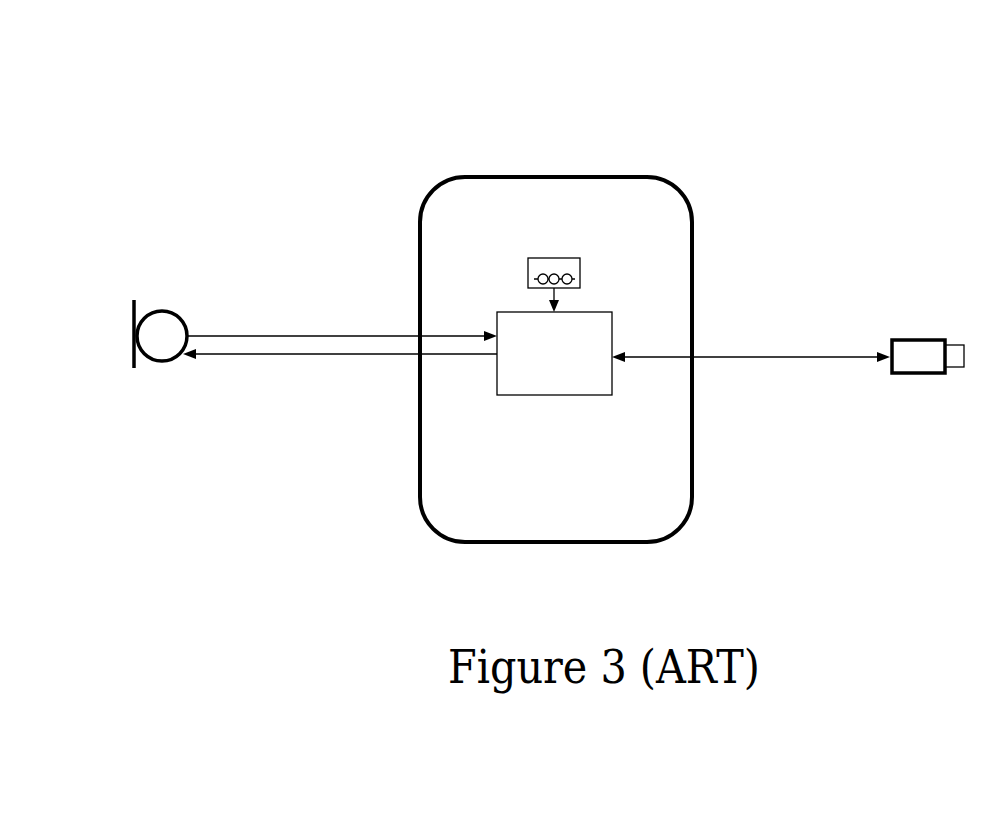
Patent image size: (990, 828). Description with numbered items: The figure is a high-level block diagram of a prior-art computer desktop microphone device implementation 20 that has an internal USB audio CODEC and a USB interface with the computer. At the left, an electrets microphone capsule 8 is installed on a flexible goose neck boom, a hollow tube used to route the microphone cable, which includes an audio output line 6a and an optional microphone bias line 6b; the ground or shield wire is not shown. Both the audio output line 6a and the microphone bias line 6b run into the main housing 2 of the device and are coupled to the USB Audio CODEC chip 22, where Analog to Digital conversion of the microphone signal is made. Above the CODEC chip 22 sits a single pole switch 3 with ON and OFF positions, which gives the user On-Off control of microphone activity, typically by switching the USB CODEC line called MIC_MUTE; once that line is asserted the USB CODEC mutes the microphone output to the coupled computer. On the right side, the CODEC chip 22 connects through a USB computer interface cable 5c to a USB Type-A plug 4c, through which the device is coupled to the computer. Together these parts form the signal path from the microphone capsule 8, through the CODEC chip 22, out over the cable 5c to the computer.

The computer desktop microphone device implementation 20 is at (286, 127).
The housing / device 2 is at (692, 239).
The single pole switch 3 is at (555, 258).
The USB Audio CODEC chip 22 is at (545, 396).
The audio output line 6a is at (273, 335).
The microphone bias line 6b is at (270, 355).
The electrets microphone capsule 8 is at (162, 311).
The USB computer interface cable 5c is at (797, 357).
The USB Type-A plug 4c is at (923, 340).